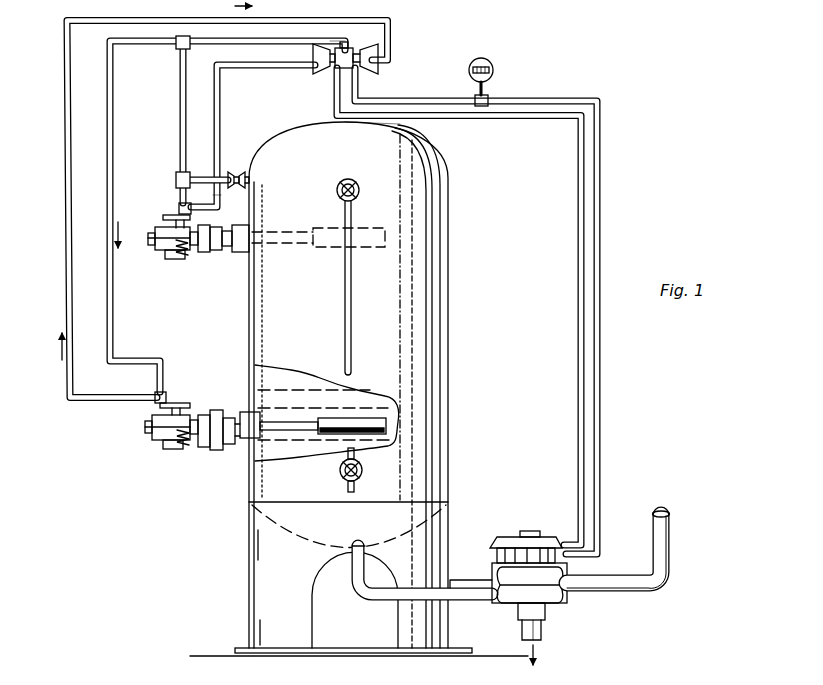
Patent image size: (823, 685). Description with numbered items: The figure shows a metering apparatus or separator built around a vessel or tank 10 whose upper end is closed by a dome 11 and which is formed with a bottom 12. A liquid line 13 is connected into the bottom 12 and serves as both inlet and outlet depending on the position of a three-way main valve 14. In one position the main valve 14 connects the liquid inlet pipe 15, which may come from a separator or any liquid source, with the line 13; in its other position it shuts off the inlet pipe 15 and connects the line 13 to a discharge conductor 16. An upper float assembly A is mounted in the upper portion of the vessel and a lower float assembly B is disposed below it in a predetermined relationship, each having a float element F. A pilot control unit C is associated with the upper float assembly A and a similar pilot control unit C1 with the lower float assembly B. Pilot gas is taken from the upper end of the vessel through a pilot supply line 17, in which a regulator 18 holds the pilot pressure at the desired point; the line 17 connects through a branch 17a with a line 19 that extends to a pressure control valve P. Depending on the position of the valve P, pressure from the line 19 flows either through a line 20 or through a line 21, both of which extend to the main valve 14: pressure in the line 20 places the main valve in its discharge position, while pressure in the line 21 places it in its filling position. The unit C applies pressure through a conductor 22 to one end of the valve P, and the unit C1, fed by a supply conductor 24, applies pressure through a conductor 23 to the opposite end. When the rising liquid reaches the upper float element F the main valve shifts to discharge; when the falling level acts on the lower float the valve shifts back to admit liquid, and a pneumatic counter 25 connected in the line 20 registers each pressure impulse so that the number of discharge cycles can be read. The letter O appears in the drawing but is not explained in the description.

The vessel or tank 10 is at (452, 254).
The dome 11 is at (433, 143).
The bottom 12 is at (290, 543).
The liquid line 13 is at (383, 600).
The main valve 14 is at (556, 603).
The liquid inlet pipe 15 is at (672, 553).
The discharge conductor 16 is at (548, 634).
The pilot supply line 17 is at (200, 175).
The branch 17a is at (178, 81).
The regulator 18 is at (237, 172).
The line 19 is at (348, 39).
The line 20 is at (412, 98).
The line 21 is at (532, 119).
The conductor 22 is at (243, 66).
The conductor 23 is at (66, 288).
The supply conductor 24 is at (114, 287).
The pneumatic counter 25 is at (495, 70).
The pressure control valve P is at (385, 45).
The upper float assembly A is at (235, 262).
The lower float assembly B is at (232, 444).
The pilot control unit C is at (175, 203).
The pilot control unit C1 is at (172, 393).
The pipe outlet O is at (221, 194).
The float element F is at (372, 226).